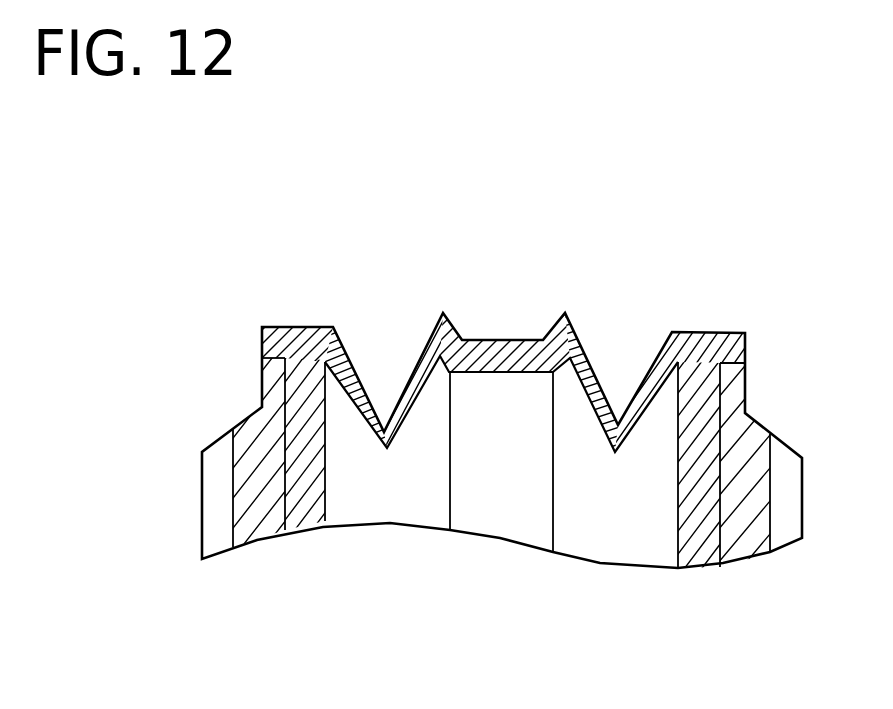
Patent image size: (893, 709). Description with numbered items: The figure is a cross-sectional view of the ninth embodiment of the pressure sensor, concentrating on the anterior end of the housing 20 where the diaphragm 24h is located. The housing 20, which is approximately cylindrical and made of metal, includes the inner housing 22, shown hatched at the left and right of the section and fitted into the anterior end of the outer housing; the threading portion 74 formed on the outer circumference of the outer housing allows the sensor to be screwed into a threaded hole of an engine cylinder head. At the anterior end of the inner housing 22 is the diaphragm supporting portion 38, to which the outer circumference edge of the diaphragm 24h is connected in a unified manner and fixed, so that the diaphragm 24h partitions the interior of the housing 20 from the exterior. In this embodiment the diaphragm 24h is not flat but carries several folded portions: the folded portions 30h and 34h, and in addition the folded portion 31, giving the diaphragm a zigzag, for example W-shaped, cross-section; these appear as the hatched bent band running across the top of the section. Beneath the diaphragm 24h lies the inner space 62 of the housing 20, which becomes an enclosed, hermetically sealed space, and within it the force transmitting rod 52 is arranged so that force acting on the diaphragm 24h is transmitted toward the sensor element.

The housing 20 is at (210, 424).
The diaphragm supporting portion 38 is at (260, 342).
The folded portion 31 is at (456, 328).
The diaphragm 24h is at (481, 282).
The inner housing 22 is at (302, 528).
The inner space 62 is at (262, 542).
The threading portion 74 is at (218, 555).
The folded portion 34h is at (353, 425).
The folded portion 30h is at (410, 407).
The force transmitting rod 52 is at (502, 520).